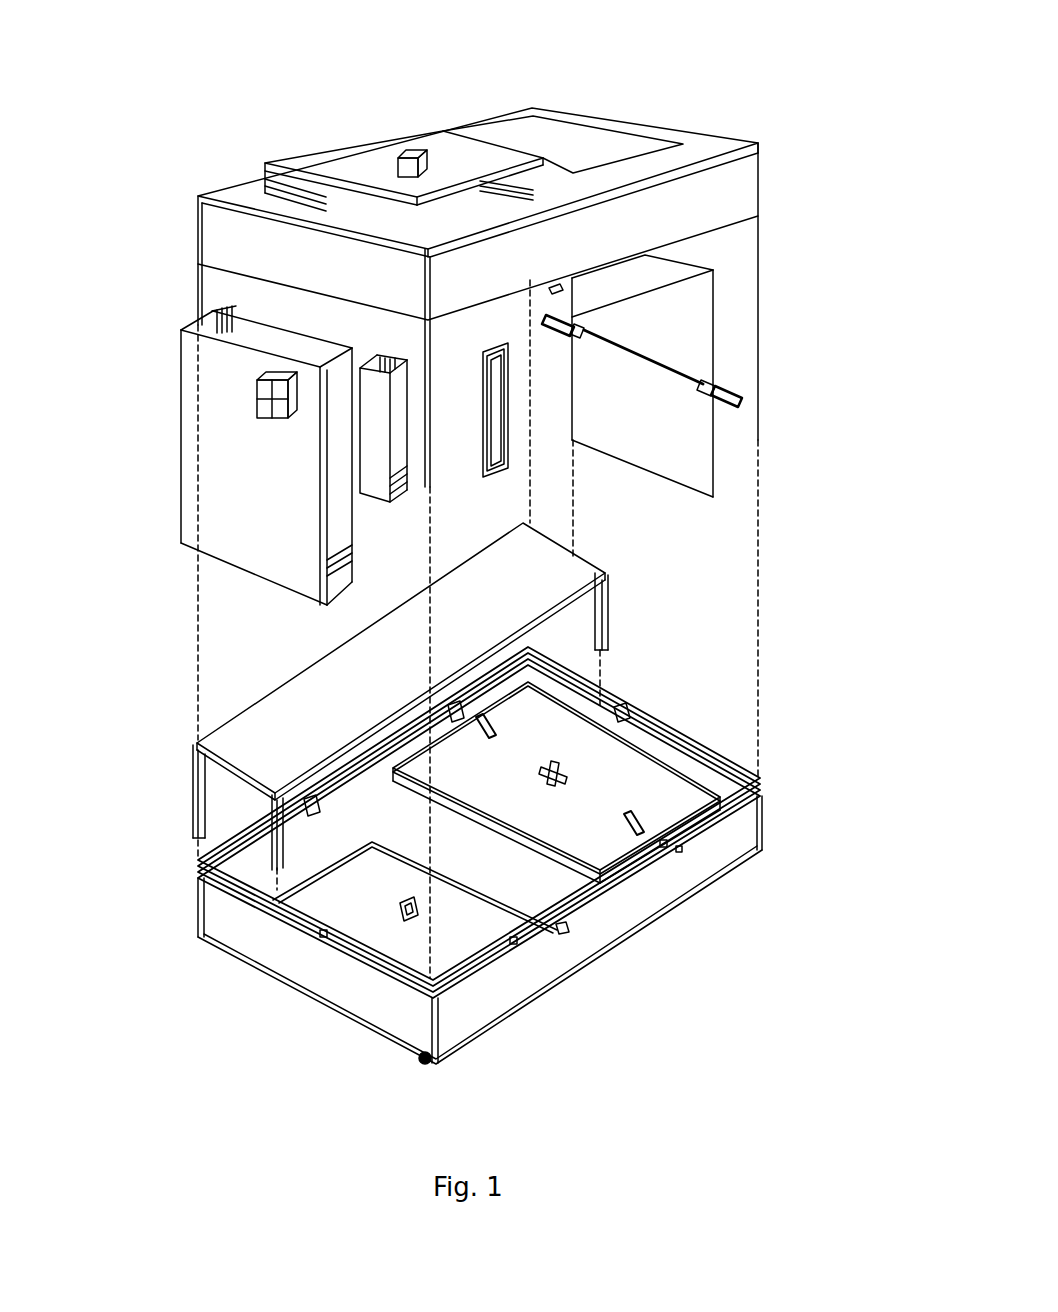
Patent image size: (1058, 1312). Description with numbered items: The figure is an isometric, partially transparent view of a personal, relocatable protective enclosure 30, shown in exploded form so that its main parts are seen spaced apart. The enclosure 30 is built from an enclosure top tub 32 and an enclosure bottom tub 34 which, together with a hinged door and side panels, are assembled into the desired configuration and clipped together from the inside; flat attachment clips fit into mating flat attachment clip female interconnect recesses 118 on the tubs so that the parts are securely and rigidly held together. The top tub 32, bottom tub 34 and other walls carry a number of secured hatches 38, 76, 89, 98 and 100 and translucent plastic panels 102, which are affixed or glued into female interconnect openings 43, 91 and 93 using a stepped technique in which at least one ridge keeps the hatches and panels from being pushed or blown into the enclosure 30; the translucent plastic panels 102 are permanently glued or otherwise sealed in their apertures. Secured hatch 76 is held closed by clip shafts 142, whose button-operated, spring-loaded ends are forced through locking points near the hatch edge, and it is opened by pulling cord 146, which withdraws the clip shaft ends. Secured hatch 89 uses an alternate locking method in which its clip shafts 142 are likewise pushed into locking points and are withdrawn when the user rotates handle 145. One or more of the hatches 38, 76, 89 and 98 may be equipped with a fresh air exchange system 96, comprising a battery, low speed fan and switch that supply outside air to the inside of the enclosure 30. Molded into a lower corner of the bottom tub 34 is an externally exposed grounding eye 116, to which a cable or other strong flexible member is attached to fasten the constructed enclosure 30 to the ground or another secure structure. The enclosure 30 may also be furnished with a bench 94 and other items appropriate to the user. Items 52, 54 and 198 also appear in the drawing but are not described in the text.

The protective enclosure 30 is at (479, 584).
The enclosure top tub 32 is at (232, 245).
The enclosure bottom tub 34 is at (230, 925).
The secured hatch 38 is at (260, 471).
The female interconnect opening 43 is at (492, 432).
The fastener 52 is at (557, 284).
The fastener 54 is at (562, 930).
The secured hatch 76 is at (660, 418).
The secured hatch 89 is at (637, 873).
The female interconnect opening 91 is at (217, 322).
The female interconnect opening 93 is at (323, 198).
The bench 94 is at (303, 720).
The fresh air exchange system 96 is at (110, 368).
The secured hatch 98 is at (393, 140).
The secured hatch 100 is at (566, 123).
The translucent plastic panel 102 is at (377, 458).
The grounding eye 116 is at (416, 1067).
The flat attachment clip female interconnect recess 118 is at (622, 707).
The clip shaft 142 is at (578, 327).
The handle 145 is at (568, 770).
The cord 146 is at (642, 354).
The clip 198 is at (395, 920).